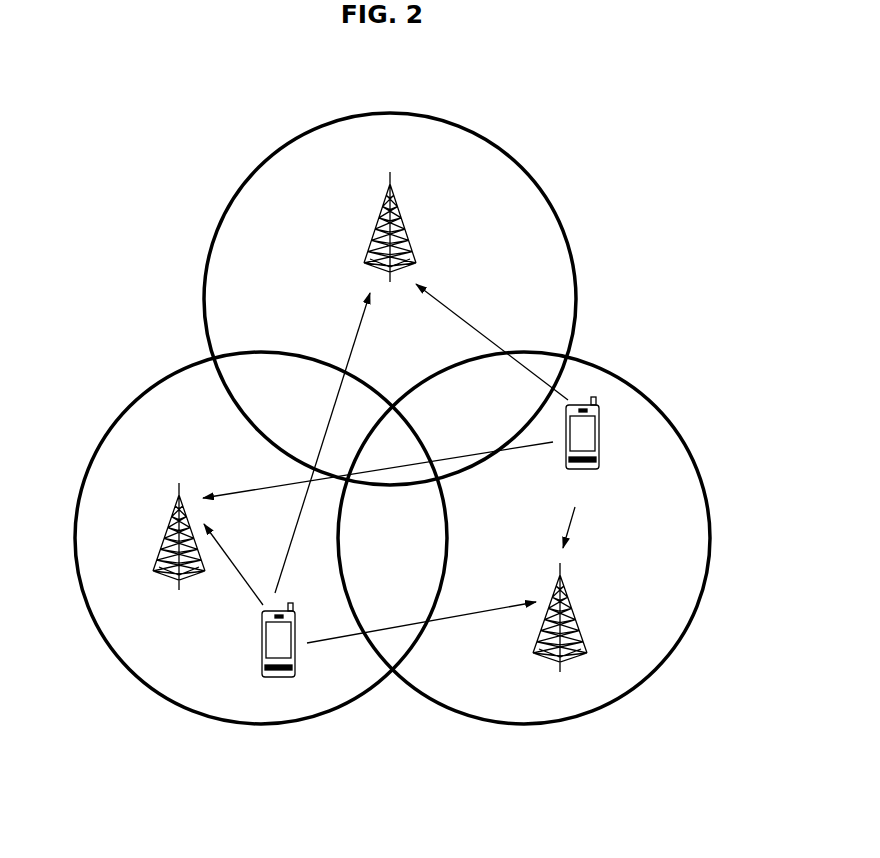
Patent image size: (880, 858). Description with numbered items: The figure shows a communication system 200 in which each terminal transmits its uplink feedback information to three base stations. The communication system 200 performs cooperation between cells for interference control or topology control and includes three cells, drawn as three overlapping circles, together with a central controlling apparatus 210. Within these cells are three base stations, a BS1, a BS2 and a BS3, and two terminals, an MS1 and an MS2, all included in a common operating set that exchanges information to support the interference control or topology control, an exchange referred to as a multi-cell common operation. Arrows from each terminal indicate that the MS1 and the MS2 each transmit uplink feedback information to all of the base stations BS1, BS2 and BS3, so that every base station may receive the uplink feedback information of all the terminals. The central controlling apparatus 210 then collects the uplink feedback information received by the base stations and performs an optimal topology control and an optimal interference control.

The communication system 200 is at (190, 144).
The central controlling apparatus 210 is at (659, 93).
The first base station BS1 is at (179, 519).
The second base station BS2 is at (560, 634).
The third base station BS3 is at (390, 210).
The first terminal MS1 is at (277, 655).
The second terminal MS2 is at (582, 450).